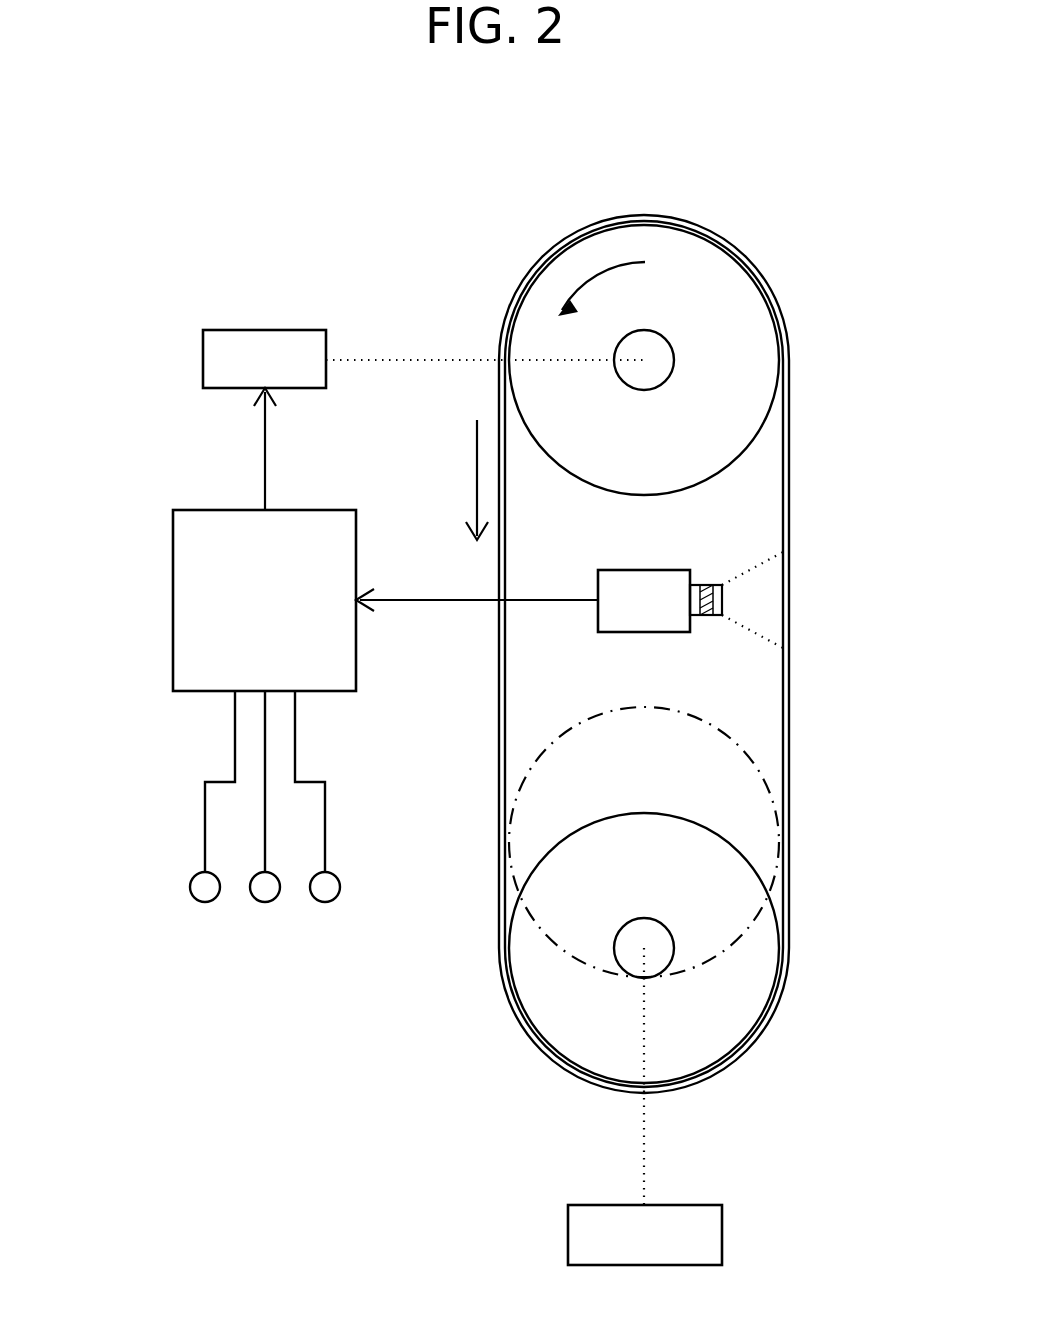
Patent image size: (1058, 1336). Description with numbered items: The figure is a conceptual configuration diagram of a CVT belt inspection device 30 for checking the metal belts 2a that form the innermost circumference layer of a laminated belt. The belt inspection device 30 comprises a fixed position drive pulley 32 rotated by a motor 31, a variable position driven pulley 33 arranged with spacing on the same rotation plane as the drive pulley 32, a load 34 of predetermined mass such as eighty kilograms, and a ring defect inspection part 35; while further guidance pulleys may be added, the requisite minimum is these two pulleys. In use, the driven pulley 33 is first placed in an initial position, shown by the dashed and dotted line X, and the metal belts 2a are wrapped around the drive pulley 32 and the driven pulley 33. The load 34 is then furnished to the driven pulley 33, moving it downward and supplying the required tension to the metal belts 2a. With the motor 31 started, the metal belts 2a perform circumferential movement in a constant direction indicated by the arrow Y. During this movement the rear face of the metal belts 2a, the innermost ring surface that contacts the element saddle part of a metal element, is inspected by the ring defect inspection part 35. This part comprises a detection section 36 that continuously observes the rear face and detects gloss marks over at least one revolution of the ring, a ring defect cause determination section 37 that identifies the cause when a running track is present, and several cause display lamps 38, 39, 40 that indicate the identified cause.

The CVT belt inspection device 30 is at (781, 203).
The metal belts 2a is at (790, 502).
The motor 31 is at (265, 330).
The drive pulley 32 is at (767, 330).
The driven pulley 33 is at (752, 1008).
The load 34 is at (722, 1228).
The ring defect inspection part 35 is at (140, 486).
The detection section 36 is at (628, 570).
The ring defect cause determination section 37 is at (222, 508).
The cause display lamp 38 is at (205, 902).
The cause display lamp 39 is at (265, 902).
The cause display lamp 40 is at (325, 902).
The dashed and dotted line X is at (614, 708).
The arrow Y is at (477, 472).